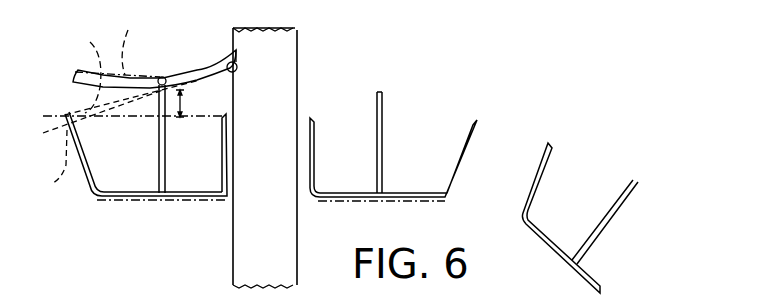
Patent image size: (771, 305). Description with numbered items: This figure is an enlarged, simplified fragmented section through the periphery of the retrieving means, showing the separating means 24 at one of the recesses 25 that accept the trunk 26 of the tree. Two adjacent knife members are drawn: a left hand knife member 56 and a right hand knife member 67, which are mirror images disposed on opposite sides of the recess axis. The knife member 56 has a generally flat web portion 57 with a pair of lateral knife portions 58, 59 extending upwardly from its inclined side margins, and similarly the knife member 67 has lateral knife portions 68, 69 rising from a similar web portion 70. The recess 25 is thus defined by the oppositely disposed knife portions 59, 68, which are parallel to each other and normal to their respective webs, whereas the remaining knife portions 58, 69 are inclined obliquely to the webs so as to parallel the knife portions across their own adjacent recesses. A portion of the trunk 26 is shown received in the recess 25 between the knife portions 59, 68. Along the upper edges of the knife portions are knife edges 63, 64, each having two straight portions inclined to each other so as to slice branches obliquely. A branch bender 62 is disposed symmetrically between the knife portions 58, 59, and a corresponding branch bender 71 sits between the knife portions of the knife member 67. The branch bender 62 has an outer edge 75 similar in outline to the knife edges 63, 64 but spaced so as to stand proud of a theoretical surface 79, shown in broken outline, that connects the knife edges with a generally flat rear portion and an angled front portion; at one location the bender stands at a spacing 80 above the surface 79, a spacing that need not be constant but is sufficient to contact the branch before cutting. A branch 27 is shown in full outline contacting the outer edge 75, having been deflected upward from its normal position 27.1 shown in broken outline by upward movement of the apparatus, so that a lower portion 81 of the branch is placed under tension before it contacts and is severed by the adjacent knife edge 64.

The separating means 24 is at (579, 193).
The recess 25 is at (277, 117).
The trunk 26 is at (298, 218).
The branch 27 is at (136, 48).
The normal position of branch 27.1 is at (43, 163).
The knife member 56 is at (133, 137).
The web portion 57 is at (140, 193).
The knife portion 58 is at (78, 137).
The knife portion 59 is at (223, 160).
The branch bender 62 is at (163, 168).
The knife edge 63 is at (73, 111).
The knife edge 64 is at (226, 117).
The knife member 67 is at (356, 113).
The knife portion 68 is at (314, 146).
The knife portion 69 is at (456, 155).
The web portion 70 is at (396, 195).
The branch bender 71 is at (383, 108).
The outer edge 75 is at (164, 96).
The theoretical surface 79 is at (80, 71).
The spacing 80 is at (183, 103).
The lower portion of branch 81 is at (235, 55).